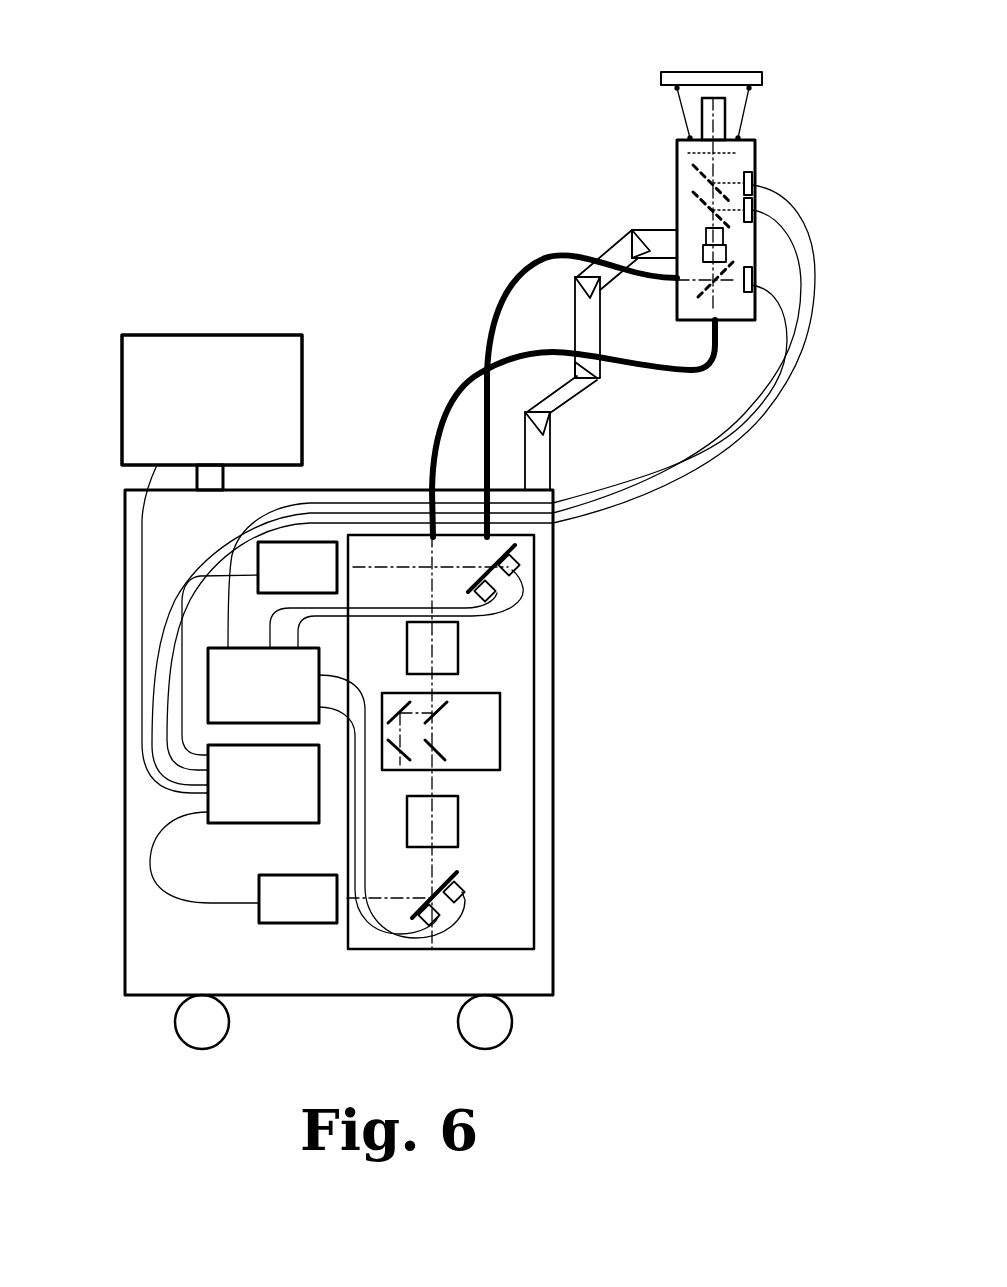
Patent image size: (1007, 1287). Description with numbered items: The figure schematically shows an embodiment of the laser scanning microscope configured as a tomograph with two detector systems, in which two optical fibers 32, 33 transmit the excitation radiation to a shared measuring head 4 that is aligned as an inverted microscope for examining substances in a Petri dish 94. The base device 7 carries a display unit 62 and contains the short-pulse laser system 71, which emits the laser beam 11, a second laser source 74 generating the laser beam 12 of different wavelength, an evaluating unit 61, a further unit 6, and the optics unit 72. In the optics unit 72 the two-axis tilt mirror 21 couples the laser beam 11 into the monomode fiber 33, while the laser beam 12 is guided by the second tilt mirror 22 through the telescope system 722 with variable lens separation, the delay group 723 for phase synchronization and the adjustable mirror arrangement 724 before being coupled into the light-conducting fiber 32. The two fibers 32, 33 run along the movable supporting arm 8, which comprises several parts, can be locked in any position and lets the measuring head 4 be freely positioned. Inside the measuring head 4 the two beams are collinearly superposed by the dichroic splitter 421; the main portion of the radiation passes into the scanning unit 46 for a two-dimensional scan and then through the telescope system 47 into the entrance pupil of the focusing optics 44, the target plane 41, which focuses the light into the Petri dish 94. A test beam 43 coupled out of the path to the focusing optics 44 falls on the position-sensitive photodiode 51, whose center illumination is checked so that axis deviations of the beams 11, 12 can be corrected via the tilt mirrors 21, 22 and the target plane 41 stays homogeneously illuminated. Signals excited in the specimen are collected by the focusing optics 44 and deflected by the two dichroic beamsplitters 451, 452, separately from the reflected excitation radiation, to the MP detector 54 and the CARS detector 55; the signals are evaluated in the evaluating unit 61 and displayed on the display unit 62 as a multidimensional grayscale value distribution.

The optical measuring head 4 is at (688, 271).
The target plane 41 is at (737, 153).
The dichroic splitter 421 is at (698, 298).
The test beam 43 is at (735, 282).
The focusing optics 44 is at (705, 130).
The dichroic beamsplitter 451 is at (695, 192).
The dichroic beamsplitter 452 is at (695, 167).
The scanning unit 46 is at (663, 232).
The telescope system 47 is at (705, 232).
The position-sensitive photodiode 51 is at (755, 277).
The MP detector 54 is at (757, 203).
The CARS detector 55 is at (755, 182).
The Petri dish 94 is at (732, 82).
The movable supporting arm 8 is at (567, 327).
The light-conducting fiber 32 is at (458, 390).
The monomode fiber 33 is at (485, 305).
The base device 7 is at (124, 540).
The display unit 62 is at (192, 343).
The short-pulse laser system 71 is at (265, 558).
The control unit 6 is at (208, 690).
The evaluating unit 61 is at (208, 800).
The second laser source 74 is at (272, 922).
The optics unit 72 is at (523, 939).
The laser beam 11 is at (393, 567).
The laser beam 12 is at (383, 898).
The two-axis tilt mirror 21 is at (515, 548).
The second tilt mirror 22 is at (460, 878).
The mirror arrangement 724 is at (452, 652).
The delay group 723 is at (500, 730).
The telescope system 722 is at (452, 815).